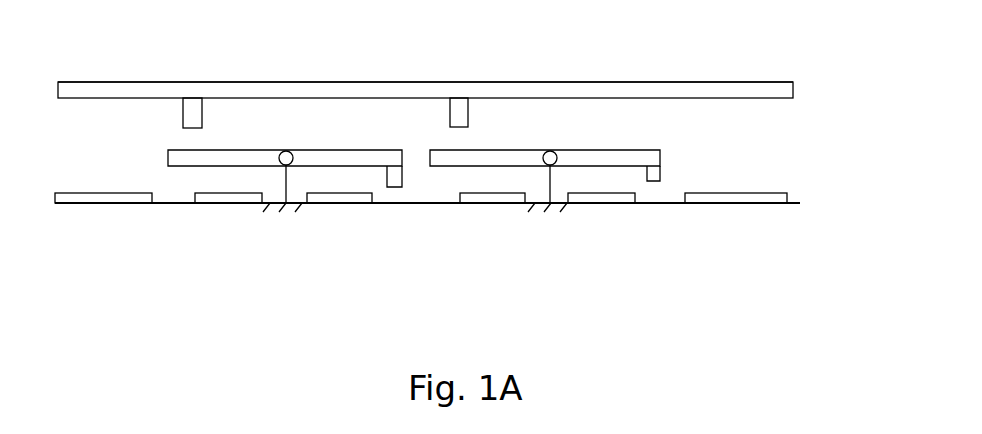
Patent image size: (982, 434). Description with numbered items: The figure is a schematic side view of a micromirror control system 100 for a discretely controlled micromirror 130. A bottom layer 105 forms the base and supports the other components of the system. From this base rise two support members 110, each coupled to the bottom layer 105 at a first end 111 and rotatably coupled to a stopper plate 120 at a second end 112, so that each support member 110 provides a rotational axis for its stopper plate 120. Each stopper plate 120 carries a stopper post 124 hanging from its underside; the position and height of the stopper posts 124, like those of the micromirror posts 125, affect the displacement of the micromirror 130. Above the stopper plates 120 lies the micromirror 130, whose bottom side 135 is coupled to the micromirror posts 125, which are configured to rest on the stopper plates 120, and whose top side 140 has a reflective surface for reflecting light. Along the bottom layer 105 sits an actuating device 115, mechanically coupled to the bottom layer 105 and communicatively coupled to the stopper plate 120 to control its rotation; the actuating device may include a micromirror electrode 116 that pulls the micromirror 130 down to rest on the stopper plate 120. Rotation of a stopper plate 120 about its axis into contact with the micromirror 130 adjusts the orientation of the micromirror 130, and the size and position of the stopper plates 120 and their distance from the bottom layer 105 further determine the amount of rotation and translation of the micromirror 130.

The micromirror control system 100 is at (803, 135).
The bottom layer 105 is at (801, 198).
The support member 110 is at (528, 204).
The first end 111 is at (551, 214).
The second end 112 is at (281, 147).
The actuating device 115 is at (618, 205).
The micromirror electrode 116 is at (730, 204).
The stopper plate 120 is at (580, 145).
The stopper post 124 is at (391, 198).
The micromirror post 125 is at (445, 112).
The micromirror 130 is at (362, 80).
The bottom side 135 is at (118, 101).
The top side 140 is at (122, 80).